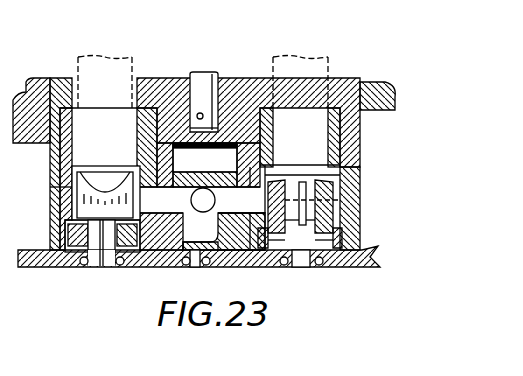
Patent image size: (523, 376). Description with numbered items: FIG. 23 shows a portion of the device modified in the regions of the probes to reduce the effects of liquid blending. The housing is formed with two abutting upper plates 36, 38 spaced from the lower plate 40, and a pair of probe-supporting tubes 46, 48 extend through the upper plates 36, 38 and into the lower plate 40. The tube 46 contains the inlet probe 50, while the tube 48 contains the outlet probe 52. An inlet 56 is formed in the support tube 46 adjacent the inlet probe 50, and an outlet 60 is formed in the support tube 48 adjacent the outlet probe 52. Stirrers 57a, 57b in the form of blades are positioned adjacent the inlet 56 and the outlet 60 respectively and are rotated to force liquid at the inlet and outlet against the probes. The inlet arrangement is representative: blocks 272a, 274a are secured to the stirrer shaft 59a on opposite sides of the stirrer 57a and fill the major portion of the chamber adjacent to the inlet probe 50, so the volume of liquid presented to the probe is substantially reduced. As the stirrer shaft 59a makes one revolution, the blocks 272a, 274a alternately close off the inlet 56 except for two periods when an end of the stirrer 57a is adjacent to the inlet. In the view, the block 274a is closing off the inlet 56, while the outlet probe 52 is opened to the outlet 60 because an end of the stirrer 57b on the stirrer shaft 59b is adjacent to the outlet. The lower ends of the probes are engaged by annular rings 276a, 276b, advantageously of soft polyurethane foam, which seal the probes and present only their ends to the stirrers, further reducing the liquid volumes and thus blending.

The upper plate 36 is at (376, 79).
The upper plate 38 is at (397, 108).
The lower plate 40 is at (363, 250).
The probe-supporting tube 46 is at (262, 83).
The probe-supporting tube 48 is at (60, 82).
The inlet probe 50 is at (370, 36).
The outlet probe 52 is at (182, 38).
The inlet 56 is at (348, 214).
The stirrer 57a is at (340, 200).
The stirrer 57b is at (85, 200).
The stirrer shaft 59a is at (304, 268).
The stirrer shaft 59b is at (107, 262).
The outlet 60 is at (60, 188).
The block 272a is at (229, 188).
The block 274a is at (318, 185).
The annular ring 276a is at (323, 118).
The annular ring 276b is at (127, 116).